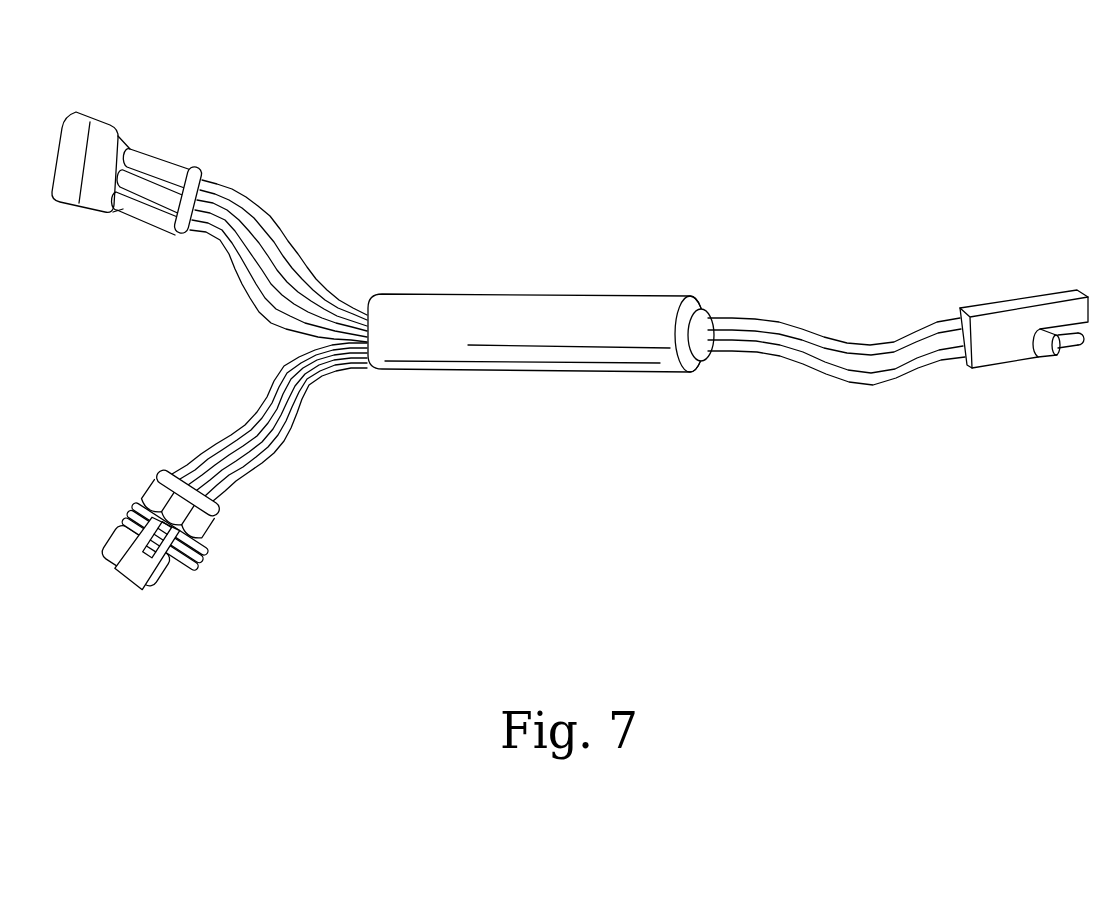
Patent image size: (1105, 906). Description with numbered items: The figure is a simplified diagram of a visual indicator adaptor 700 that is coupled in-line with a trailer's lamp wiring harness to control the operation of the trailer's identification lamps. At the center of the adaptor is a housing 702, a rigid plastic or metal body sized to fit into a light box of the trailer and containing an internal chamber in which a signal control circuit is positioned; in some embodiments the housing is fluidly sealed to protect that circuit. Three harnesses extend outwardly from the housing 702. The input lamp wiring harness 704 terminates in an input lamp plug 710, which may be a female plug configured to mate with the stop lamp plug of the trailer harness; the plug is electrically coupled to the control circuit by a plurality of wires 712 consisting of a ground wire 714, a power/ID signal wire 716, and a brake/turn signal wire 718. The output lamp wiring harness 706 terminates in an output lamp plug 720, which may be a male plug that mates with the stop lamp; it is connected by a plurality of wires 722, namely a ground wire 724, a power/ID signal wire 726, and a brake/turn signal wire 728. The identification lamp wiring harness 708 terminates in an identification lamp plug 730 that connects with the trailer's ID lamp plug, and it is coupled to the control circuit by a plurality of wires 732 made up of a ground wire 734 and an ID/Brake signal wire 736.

The visual indicator adaptor 700 is at (570, 351).
The housing 702 is at (548, 300).
The input lamp wiring harness 704 is at (220, 221).
The output lamp wiring harness 706 is at (221, 480).
The identification lamp wiring harness 708 is at (898, 361).
The input lamp plug 710 is at (125, 130).
The plurality of wires 712 is at (242, 268).
The ground wire 714 is at (267, 267).
The power/ID signal wire 716 is at (327, 293).
The brake/turn signal wire 718 is at (210, 264).
The output lamp plug 720 is at (195, 570).
The plurality of wires 722 is at (209, 432).
The ground wire 724 is at (290, 368).
The power/ID signal wire 726 is at (237, 490).
The brake/turn signal wire 728 is at (242, 428).
The identification lamp plug 730 is at (1017, 303).
The plurality of wires 732 is at (836, 373).
The ground wire 734 is at (812, 322).
The ID/Brake signal wire 736 is at (777, 360).